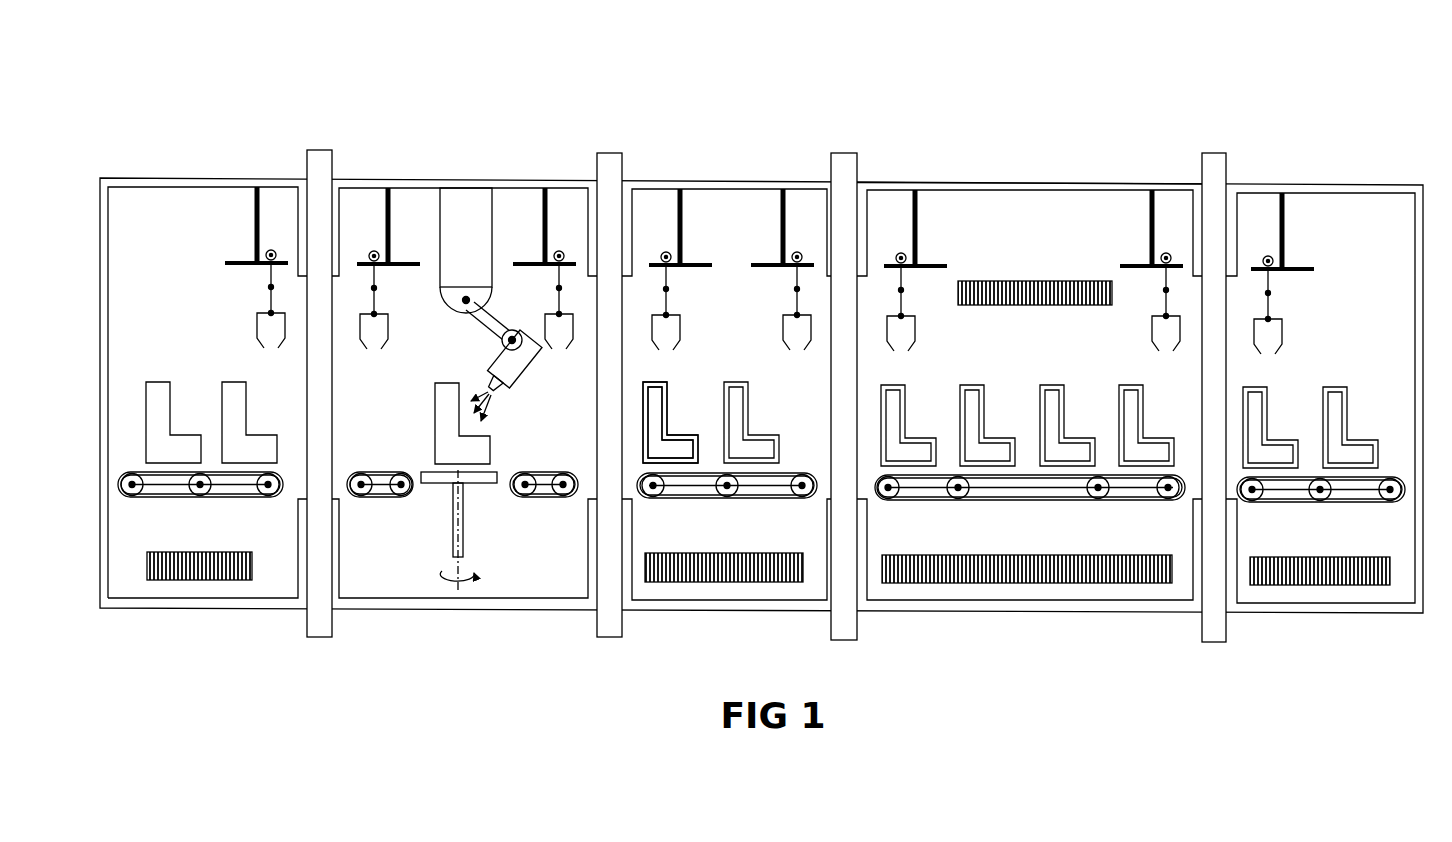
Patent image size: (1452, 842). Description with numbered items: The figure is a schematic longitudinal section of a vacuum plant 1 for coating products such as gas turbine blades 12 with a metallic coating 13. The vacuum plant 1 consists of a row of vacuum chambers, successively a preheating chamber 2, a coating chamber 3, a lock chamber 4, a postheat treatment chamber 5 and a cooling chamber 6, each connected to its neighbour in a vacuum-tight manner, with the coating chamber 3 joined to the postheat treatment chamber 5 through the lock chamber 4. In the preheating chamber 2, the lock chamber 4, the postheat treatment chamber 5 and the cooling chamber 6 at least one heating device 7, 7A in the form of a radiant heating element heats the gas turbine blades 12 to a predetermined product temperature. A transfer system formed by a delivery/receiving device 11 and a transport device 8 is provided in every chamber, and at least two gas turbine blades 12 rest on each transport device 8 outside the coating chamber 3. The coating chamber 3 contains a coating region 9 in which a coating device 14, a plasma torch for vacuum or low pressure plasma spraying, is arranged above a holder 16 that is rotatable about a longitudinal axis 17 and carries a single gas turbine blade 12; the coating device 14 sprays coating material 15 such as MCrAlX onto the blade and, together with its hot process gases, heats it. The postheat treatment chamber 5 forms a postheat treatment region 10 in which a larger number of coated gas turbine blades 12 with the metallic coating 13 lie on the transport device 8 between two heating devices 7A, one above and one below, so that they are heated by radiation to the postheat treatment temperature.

The vacuum plant 1 is at (157, 170).
The preheating chamber 2 is at (215, 178).
The coating chamber 3 is at (429, 178).
The lock chamber 4 is at (733, 181).
The postheat treatment chamber 5 is at (1050, 183).
The cooling chamber 6 is at (1354, 185).
The heating device 7 is at (198, 572).
The heating device 7A is at (1020, 289).
The transport device 8 is at (192, 498).
The coating region 9 is at (491, 263).
The postheat treatment region 10 is at (1090, 237).
The delivery/receiving device 11 is at (259, 211).
The gas turbine blade 12 is at (160, 392).
The metallic coating 13 is at (668, 421).
The coating device 14 is at (465, 213).
The coating material 15 is at (487, 403).
The holder 16 is at (466, 515).
The longitudinal axis 17 is at (455, 558).